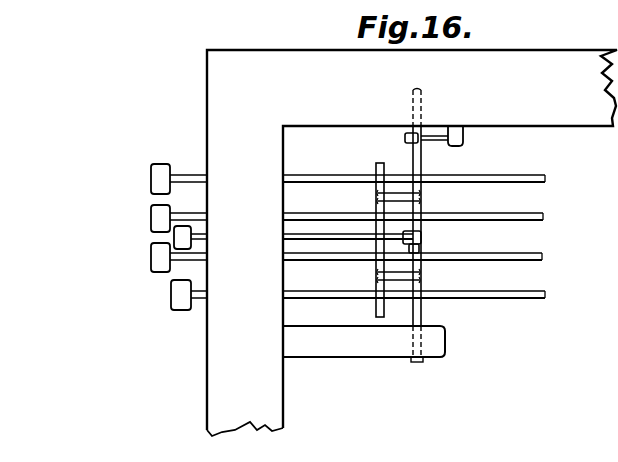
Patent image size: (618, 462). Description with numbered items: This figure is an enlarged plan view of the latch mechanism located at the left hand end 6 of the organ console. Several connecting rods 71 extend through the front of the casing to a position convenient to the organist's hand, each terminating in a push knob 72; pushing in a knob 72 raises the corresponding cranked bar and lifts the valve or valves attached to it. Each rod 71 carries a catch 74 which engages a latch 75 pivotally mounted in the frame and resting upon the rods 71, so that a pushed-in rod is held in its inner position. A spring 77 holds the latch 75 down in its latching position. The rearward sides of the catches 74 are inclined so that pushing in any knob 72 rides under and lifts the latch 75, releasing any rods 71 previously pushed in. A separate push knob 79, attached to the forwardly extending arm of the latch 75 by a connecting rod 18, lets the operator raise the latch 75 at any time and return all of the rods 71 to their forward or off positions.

The left hand end of the console 6 is at (549, 118).
The operating rod 18 is at (198, 234).
The connecting rods 71 is at (546, 181).
The push knobs 72 is at (170, 293).
The catch 74 is at (388, 296).
The latch 75 is at (368, 178).
The spring 77 is at (442, 142).
The push knob 79 is at (174, 236).